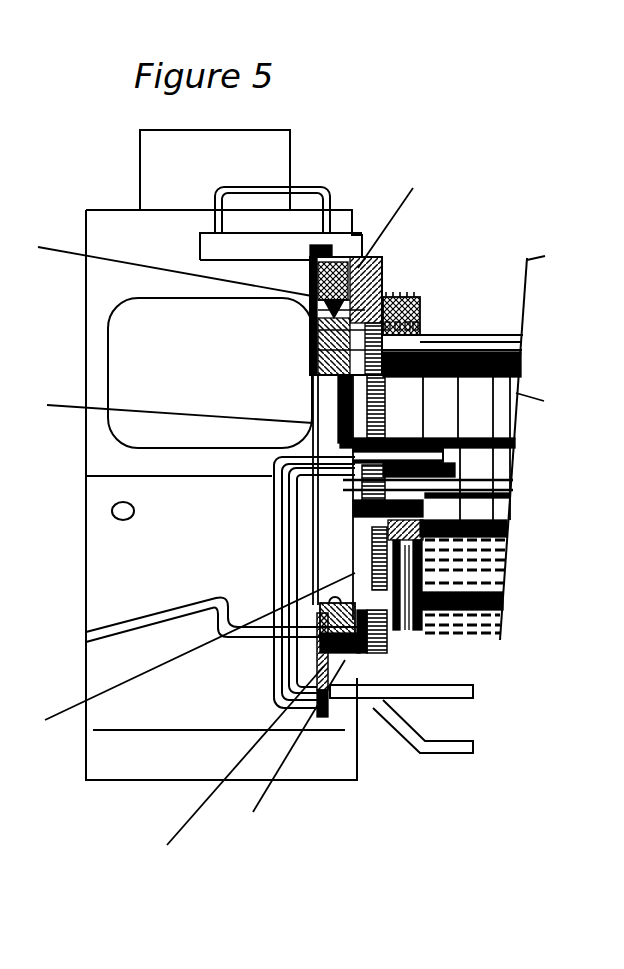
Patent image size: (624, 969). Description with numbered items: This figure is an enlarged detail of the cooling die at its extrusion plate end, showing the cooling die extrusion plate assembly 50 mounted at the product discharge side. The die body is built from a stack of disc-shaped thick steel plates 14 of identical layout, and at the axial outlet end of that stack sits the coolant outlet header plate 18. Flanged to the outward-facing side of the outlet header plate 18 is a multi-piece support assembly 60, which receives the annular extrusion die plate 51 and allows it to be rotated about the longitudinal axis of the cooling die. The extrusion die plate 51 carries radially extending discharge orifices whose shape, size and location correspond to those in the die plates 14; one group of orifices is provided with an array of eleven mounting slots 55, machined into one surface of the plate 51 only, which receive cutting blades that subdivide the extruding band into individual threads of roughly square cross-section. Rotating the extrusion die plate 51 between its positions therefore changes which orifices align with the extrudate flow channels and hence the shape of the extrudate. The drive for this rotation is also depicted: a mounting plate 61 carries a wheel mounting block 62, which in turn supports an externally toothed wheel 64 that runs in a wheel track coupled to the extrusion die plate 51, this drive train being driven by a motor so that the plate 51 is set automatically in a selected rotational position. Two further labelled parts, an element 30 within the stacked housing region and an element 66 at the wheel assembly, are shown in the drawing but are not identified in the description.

The die body plate 14 is at (470, 398).
The coolant outlet header plate 18 is at (418, 297).
The gear 30 is at (437, 347).
The cooling die extrusion plate assembly 50 is at (355, 545).
The extrusion die plate 51 is at (357, 553).
The mounting slot 55 is at (355, 527).
The support assembly 60 is at (378, 662).
The mounting plate 61 is at (352, 672).
The wheel mounting block 62 is at (377, 257).
The externally toothed wheel 64 is at (312, 265).
The seal 66 is at (315, 323).